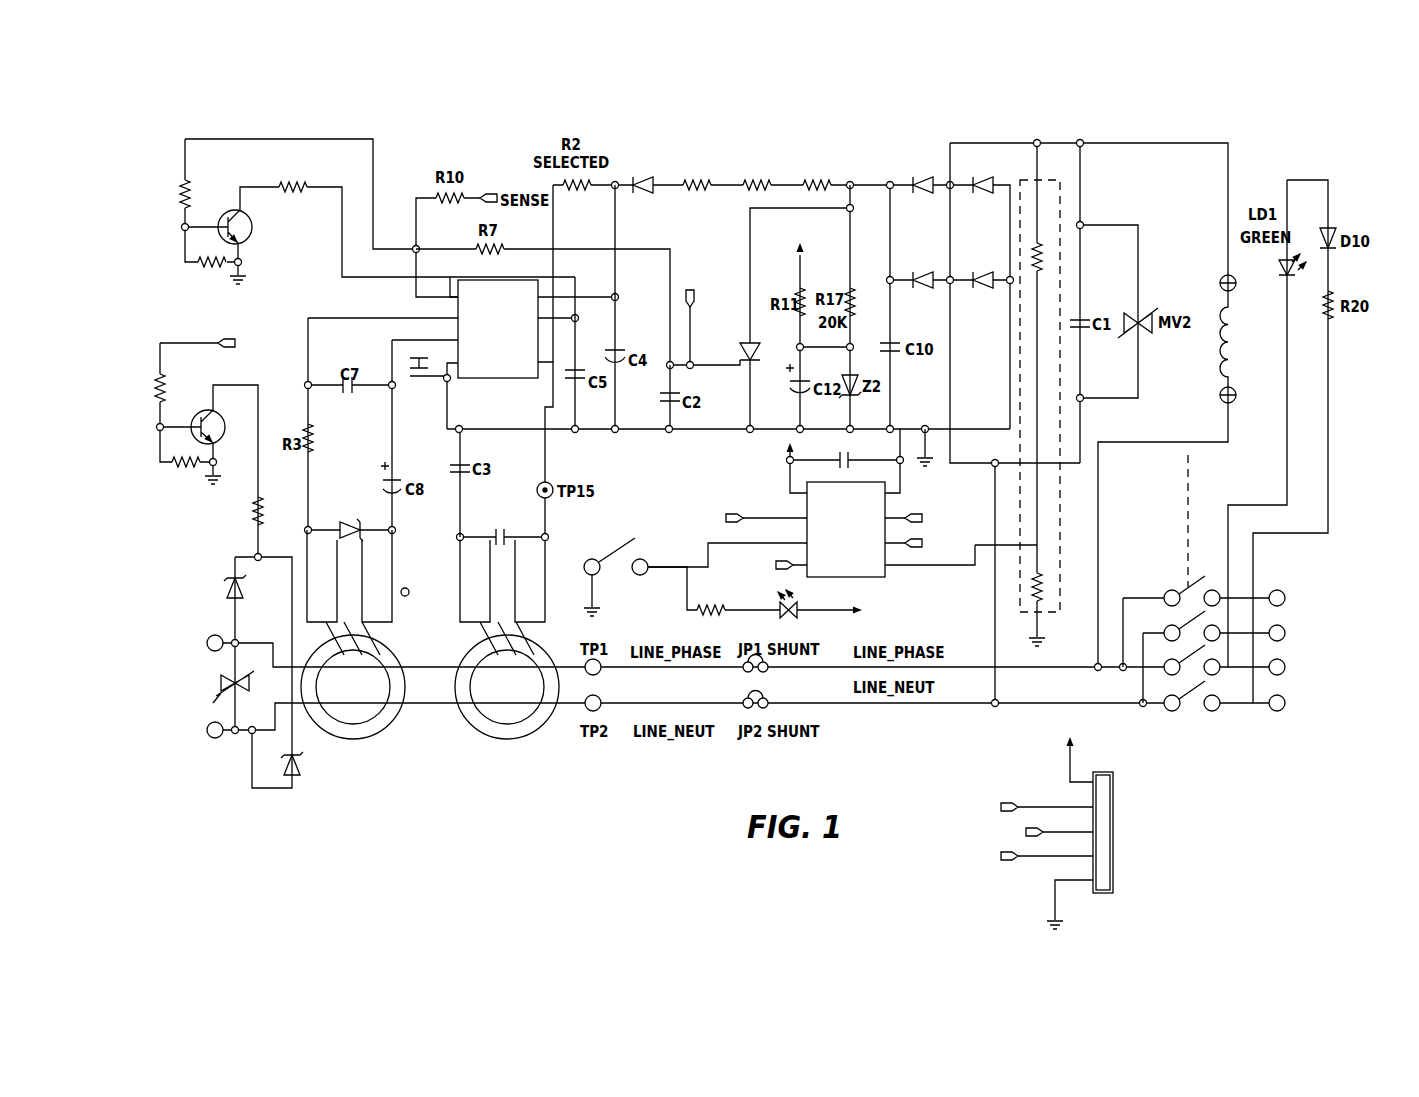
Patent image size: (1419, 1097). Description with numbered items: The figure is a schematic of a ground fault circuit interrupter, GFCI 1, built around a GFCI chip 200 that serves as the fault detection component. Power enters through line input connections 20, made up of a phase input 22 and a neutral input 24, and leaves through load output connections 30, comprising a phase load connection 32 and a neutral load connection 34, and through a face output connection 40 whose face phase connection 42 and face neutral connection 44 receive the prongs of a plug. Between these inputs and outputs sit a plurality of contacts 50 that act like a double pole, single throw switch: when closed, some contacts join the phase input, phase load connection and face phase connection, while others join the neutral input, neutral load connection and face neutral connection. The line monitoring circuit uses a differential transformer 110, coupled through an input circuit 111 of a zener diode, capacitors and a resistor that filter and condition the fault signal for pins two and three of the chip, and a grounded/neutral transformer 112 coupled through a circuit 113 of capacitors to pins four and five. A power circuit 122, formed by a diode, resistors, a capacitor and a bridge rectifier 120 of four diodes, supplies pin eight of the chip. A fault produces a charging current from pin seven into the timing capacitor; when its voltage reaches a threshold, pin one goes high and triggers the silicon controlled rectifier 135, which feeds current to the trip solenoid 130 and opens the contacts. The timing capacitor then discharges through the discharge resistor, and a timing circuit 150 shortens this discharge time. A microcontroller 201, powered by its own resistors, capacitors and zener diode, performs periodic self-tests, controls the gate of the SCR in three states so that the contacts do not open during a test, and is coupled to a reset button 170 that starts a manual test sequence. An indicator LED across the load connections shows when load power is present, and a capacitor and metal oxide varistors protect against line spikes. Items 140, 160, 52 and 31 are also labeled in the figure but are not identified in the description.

The GFCI 1 is at (756, 122).
The timing circuit 150 is at (219, 193).
The GFCI chip 200 is at (518, 280).
The power circuit 122 is at (886, 164).
The bridge rectifier 120 is at (953, 218).
The sense resistor block R15 R16 140 is at (1050, 180).
The silicon controlled rectifier 135 is at (739, 302).
The input circuit 111 is at (345, 480).
The circuit 113 is at (508, 500).
The reset button 170 is at (651, 524).
The microcontroller 201 is at (885, 572).
The trip solenoid 130 is at (1240, 336).
The differential transformer 110 is at (395, 652).
The grounded/neutral transformer 112 is at (548, 718).
The transistor Q2 circuit 160 is at (183, 437).
The phase input 22 is at (198, 629).
The line input connections 20 is at (210, 677).
The neutral input 24 is at (208, 753).
The face phase connection 42 is at (1277, 590).
The face output connection 40 is at (1348, 589).
The face neutral connection 44 is at (1285, 628).
The phase load connection 32 is at (1285, 660).
The load output connections 30 is at (1348, 680).
The neutral load connection 34 is at (1280, 711).
The test point TP7 ground contact 52 is at (625, 574).
The connector HEADS_200 31 is at (1042, 833).
The contacts 50 is at (1225, 758).